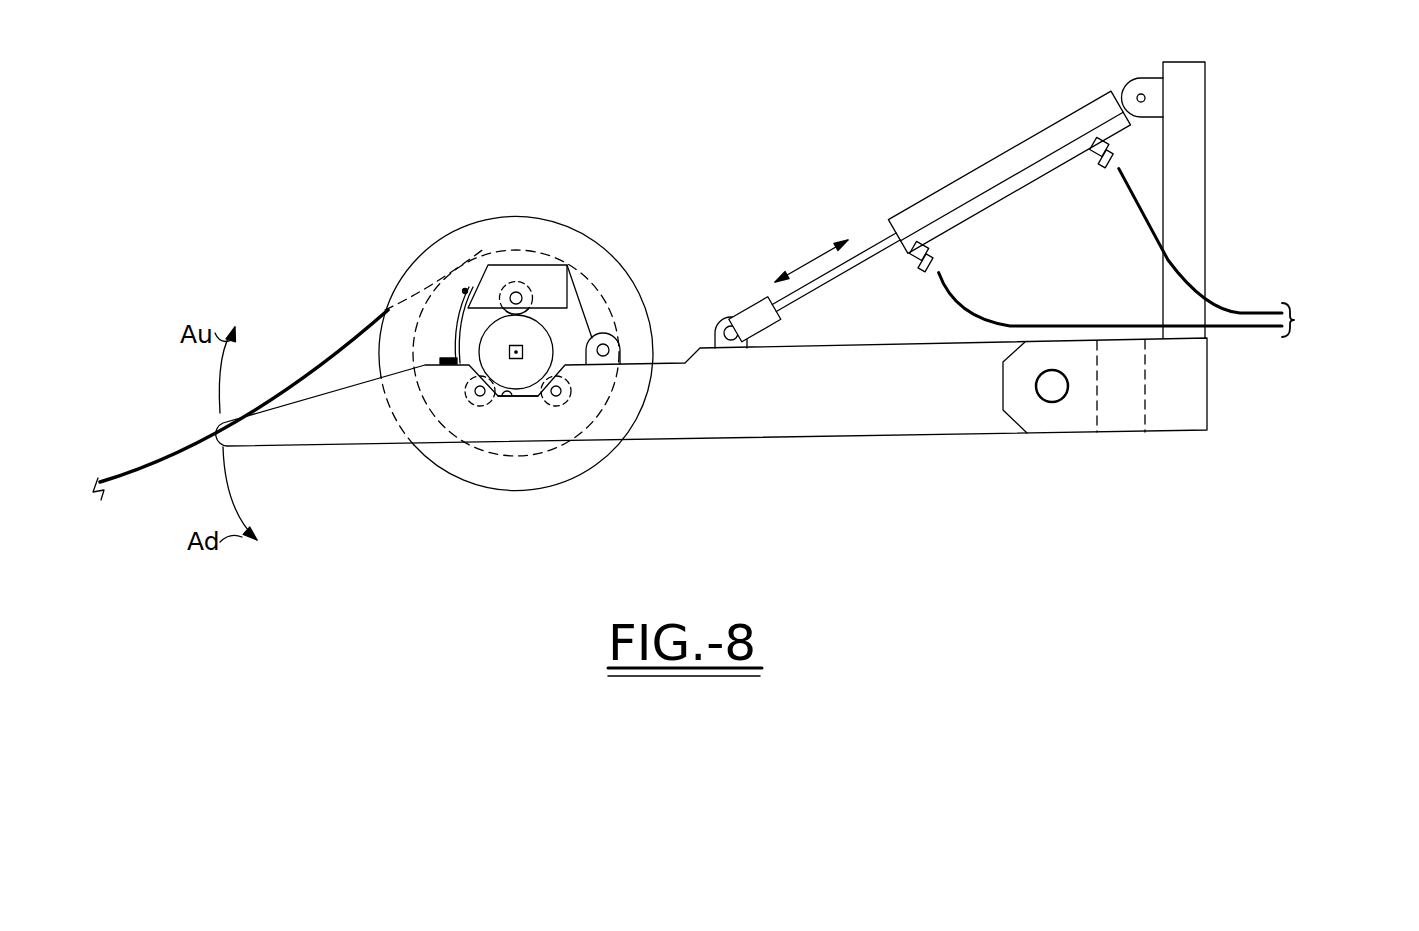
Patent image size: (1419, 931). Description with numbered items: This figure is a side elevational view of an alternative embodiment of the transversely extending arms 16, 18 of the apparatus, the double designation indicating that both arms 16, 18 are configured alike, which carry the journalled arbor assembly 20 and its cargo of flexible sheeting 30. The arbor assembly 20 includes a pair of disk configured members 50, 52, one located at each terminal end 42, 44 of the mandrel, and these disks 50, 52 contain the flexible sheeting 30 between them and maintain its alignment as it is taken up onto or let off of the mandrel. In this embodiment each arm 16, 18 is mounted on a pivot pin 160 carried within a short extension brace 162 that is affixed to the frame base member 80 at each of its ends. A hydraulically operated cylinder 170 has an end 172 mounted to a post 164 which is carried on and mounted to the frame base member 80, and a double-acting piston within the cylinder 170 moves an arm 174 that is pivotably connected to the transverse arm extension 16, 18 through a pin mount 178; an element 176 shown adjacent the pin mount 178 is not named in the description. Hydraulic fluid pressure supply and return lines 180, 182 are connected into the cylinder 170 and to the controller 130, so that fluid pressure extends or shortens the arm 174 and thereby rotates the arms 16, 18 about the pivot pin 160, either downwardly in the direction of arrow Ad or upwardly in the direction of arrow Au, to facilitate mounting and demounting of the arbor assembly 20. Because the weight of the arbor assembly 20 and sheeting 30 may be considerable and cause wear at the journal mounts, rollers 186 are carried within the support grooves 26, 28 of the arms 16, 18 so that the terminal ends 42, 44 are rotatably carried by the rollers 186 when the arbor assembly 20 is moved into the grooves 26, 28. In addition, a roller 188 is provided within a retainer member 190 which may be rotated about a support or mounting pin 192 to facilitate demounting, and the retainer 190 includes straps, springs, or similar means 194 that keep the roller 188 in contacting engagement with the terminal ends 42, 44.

The transversely extending arm 16 is at (711, 425).
The transversely extending arm 18 is at (278, 443).
The arbor assembly 20 is at (467, 305).
The support groove 26 is at (541, 429).
The support groove 28 is at (508, 399).
The flexible sheeting 30 is at (173, 447).
The arbor assembly terminal end 42 is at (577, 454).
The arbor assembly terminal end 44 is at (520, 399).
The disk configured member 50 is at (467, 345).
The disk configured member 52 is at (457, 222).
The frame base member 80 is at (1204, 397).
The controller 130 is at (1346, 333).
The pivot pin 160 is at (1052, 393).
The extension brace 162 is at (1007, 410).
The post 164 is at (1204, 112).
The hydraulically operated cylinder 170 is at (1013, 140).
The cylinder end 172 is at (1120, 92).
The arm 174 is at (847, 273).
The rod end 176 is at (752, 307).
The pin mount 178 is at (727, 318).
The hydraulic fluid pressure supply line 180 is at (1125, 177).
The hydraulic fluid return line 182 is at (975, 298).
The rollers 186 is at (480, 408).
The roller 188 is at (516, 280).
The retainer member 190 is at (547, 265).
The mounting pin 192 is at (605, 355).
The straps, springs, or similar means 194 is at (455, 325).